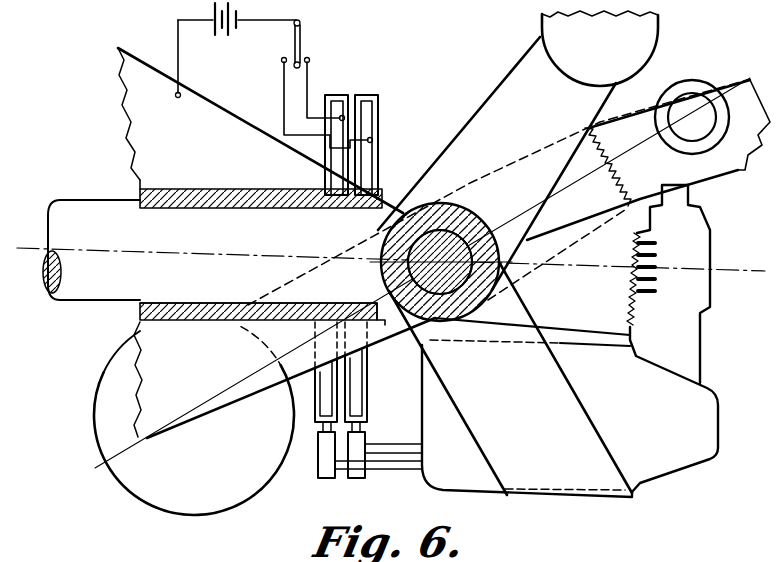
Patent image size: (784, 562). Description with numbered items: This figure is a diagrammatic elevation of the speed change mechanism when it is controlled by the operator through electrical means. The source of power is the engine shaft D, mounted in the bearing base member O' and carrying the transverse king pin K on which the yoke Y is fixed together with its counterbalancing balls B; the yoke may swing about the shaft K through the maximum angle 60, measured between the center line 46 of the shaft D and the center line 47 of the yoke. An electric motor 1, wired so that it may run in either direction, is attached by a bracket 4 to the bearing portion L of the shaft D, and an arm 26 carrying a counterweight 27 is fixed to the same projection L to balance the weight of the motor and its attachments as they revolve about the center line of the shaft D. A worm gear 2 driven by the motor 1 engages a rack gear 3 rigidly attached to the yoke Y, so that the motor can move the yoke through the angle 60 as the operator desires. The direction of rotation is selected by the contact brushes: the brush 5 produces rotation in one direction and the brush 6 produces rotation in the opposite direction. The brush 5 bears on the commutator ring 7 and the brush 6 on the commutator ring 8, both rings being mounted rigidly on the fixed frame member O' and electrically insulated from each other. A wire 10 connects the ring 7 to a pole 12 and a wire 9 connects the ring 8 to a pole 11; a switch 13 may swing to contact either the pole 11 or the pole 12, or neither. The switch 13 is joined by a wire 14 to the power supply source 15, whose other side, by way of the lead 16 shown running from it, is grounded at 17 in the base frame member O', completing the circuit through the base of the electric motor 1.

The electric motor 1 is at (655, 460).
The worm gear 2 is at (652, 278).
The rack gear 3 is at (598, 319).
The bracket 4 is at (560, 495).
The electrical contact brush 5 is at (354, 482).
The contact brush 6 is at (324, 482).
The commutator ring 7 is at (368, 97).
The commutator ring 8 is at (337, 97).
The wire 9 is at (310, 82).
The wire 10 is at (284, 97).
The pole 11 is at (310, 57).
The pole 12 is at (283, 58).
The switch 13 is at (302, 38).
The wire 14 is at (253, 22).
The power supply source 15 is at (210, 12).
The wire 16 is at (177, 42).
The ground 17 is at (181, 94).
The arm 26 is at (507, 110).
The counterweight 27 is at (565, 40).
The center line 46 is at (30, 247).
The center line 47 is at (733, 82).
The angle 60 is at (690, 122).